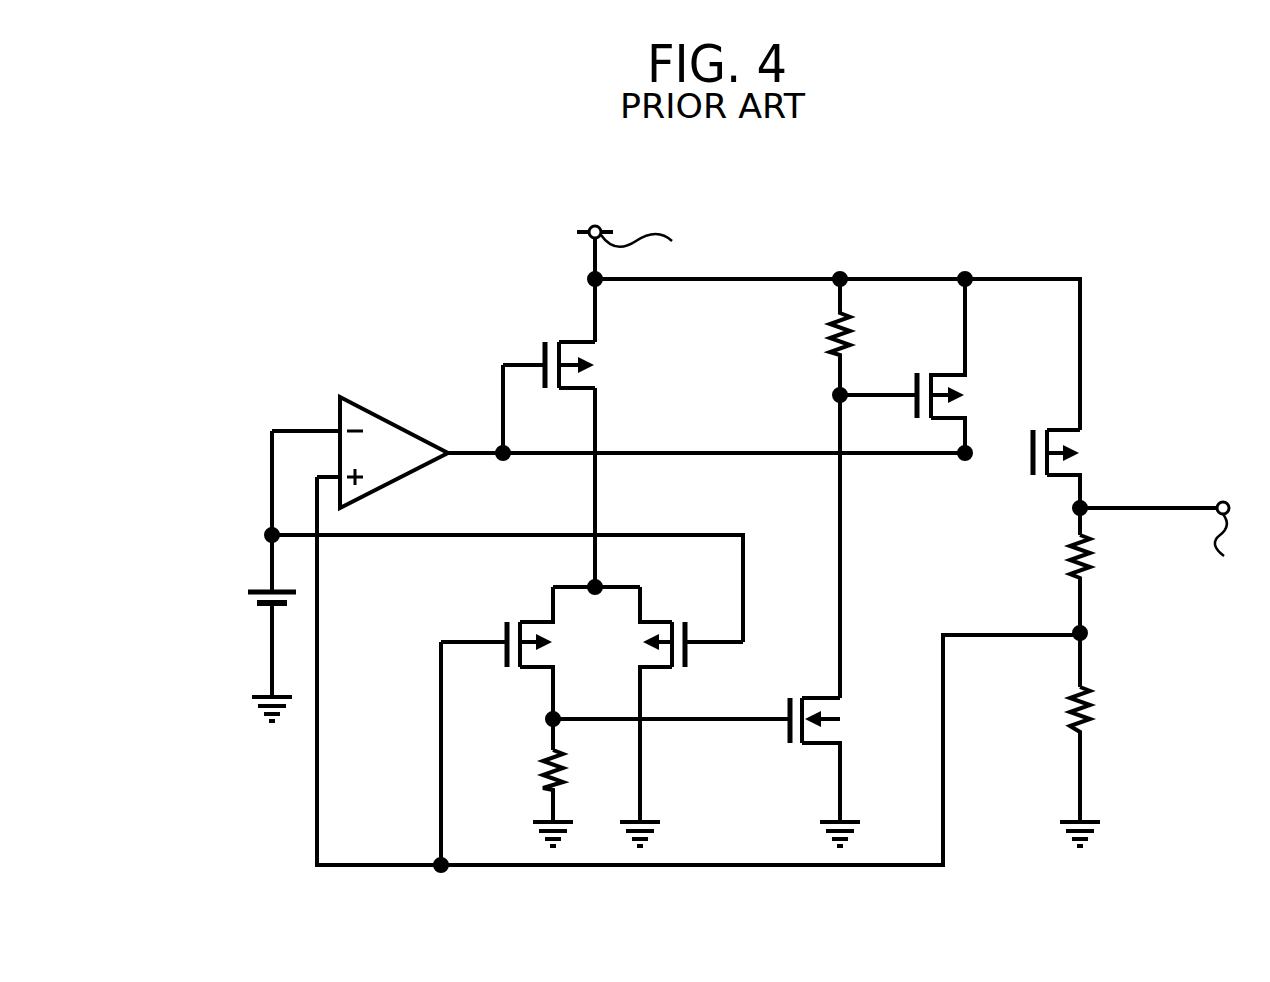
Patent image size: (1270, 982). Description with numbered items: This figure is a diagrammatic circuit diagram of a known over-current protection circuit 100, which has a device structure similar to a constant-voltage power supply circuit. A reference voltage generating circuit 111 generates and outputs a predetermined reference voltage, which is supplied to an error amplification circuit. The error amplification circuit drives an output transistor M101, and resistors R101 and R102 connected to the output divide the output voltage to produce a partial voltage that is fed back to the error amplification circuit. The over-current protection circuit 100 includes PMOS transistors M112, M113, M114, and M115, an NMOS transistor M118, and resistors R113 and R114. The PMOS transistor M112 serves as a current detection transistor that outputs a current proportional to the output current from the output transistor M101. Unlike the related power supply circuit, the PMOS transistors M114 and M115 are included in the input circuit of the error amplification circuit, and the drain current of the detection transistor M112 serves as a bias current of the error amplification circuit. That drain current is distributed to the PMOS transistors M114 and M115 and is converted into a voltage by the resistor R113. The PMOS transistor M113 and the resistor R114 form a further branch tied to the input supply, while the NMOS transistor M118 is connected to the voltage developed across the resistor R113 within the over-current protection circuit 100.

The over-current protection circuit 100 is at (864, 203).
The reference voltage generating circuit 111 is at (238, 607).
The output transistor M101 is at (1044, 467).
The PMOS transistor M112 is at (549, 347).
The PMOS transistor M113 is at (926, 366).
The PMOS transistor M114 is at (497, 668).
The PMOS transistor M115 is at (681, 716).
The NMOS transistor M118 is at (706, 756).
The resistor R101 is at (1045, 611).
The resistor R102 is at (1050, 766).
The resistor R113 is at (522, 798).
The resistor R114 is at (801, 488).